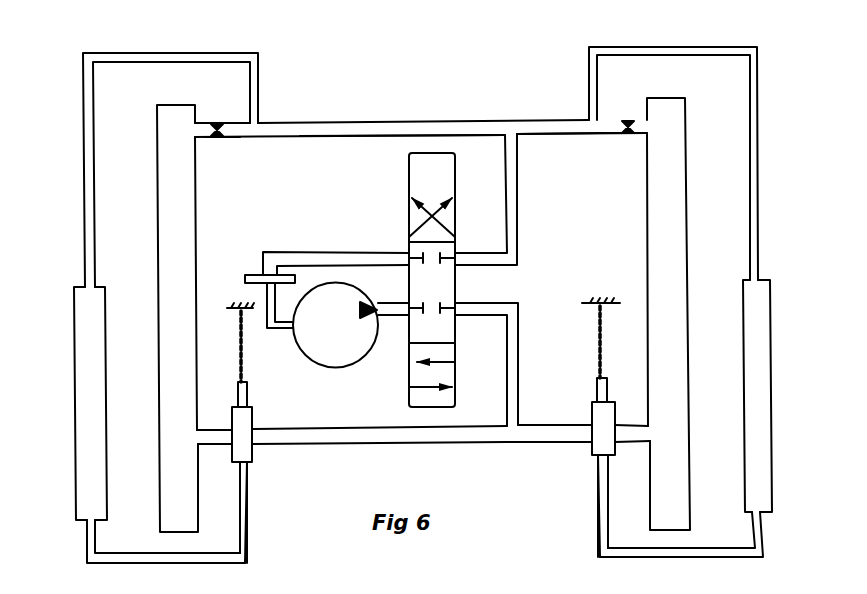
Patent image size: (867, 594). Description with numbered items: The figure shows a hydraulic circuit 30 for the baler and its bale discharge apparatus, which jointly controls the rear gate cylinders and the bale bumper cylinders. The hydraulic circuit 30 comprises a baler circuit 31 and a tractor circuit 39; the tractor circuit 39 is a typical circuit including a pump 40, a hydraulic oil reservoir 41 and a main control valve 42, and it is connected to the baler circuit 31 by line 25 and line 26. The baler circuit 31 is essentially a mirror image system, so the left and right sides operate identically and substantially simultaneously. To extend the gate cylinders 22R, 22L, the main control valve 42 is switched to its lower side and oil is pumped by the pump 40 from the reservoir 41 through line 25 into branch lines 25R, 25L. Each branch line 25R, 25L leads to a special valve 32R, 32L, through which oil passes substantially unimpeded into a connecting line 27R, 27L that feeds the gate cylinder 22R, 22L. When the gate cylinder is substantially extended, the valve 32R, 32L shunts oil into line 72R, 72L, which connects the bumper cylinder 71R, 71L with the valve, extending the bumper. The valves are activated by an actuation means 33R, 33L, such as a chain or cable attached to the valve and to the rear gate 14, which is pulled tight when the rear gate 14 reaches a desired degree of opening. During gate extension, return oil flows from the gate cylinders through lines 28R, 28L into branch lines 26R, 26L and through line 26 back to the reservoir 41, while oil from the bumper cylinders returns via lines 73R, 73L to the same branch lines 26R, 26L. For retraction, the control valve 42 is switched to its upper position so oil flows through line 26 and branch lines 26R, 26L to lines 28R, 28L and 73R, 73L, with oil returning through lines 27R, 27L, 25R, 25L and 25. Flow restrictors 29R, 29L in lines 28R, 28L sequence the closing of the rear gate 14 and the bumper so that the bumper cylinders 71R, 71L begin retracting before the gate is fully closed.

The hydraulic circuit 30 is at (438, 97).
The baler circuit 31 is at (398, 120).
The line 73L is at (258, 92).
The line 73R is at (587, 81).
The line 72L is at (247, 548).
The line 72R is at (600, 541).
The bumper cylinder 71L is at (72, 385).
The bumper cylinder 71R is at (773, 366).
The gate cylinder 22L is at (157, 223).
The gate cylinder 22R is at (685, 222).
The line 28L is at (236, 122).
The line 28R is at (612, 120).
The flow restrictor 29L is at (226, 138).
The flow restrictor 29R is at (607, 134).
The branch line 26L is at (457, 123).
The branch line 26R is at (547, 125).
The line 26 is at (517, 218).
The line 25 is at (518, 308).
The branch line 25L is at (358, 446).
The branch line 25R is at (538, 442).
The main control valve 42 is at (409, 167).
The tractor circuit 39 is at (406, 203).
The hydraulic oil reservoir 41 is at (244, 278).
The pump 40 is at (384, 371).
The rear gate 14 is at (237, 313).
The actuation means 33L is at (270, 359).
The actuation means 33R is at (598, 342).
The special valve 32L is at (253, 418).
The special valve 32R is at (590, 412).
The connecting line 27L is at (222, 442).
The connecting line 27R is at (632, 442).